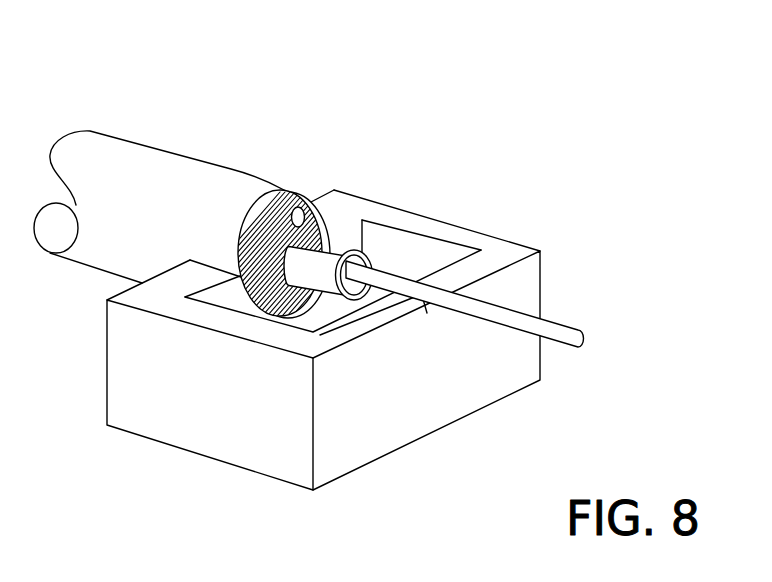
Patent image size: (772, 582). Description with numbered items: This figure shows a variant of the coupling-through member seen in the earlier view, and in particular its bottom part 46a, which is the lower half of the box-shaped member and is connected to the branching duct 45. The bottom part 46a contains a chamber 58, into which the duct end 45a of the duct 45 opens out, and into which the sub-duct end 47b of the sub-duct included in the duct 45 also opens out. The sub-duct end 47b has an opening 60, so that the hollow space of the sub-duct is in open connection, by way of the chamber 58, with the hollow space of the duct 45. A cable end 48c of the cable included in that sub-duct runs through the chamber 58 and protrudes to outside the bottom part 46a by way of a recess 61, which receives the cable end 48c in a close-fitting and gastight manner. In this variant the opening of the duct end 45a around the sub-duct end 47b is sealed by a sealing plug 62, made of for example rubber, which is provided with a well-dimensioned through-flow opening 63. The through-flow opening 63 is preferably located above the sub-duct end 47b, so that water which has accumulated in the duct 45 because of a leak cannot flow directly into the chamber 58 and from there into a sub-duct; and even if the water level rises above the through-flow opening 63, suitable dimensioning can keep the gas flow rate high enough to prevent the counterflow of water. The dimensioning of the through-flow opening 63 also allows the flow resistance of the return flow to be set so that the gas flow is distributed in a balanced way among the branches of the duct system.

The duct 45 is at (65, 137).
The duct end 45a is at (217, 162).
The bottom part 46a is at (167, 413).
The sub-duct end 47b is at (335, 250).
The cable end 48c is at (578, 330).
The chamber 58 is at (401, 262).
The opening 60 is at (353, 293).
The recess 61 is at (430, 298).
The sealing plug 62 is at (279, 190).
The through-flow opening 63 is at (298, 213).